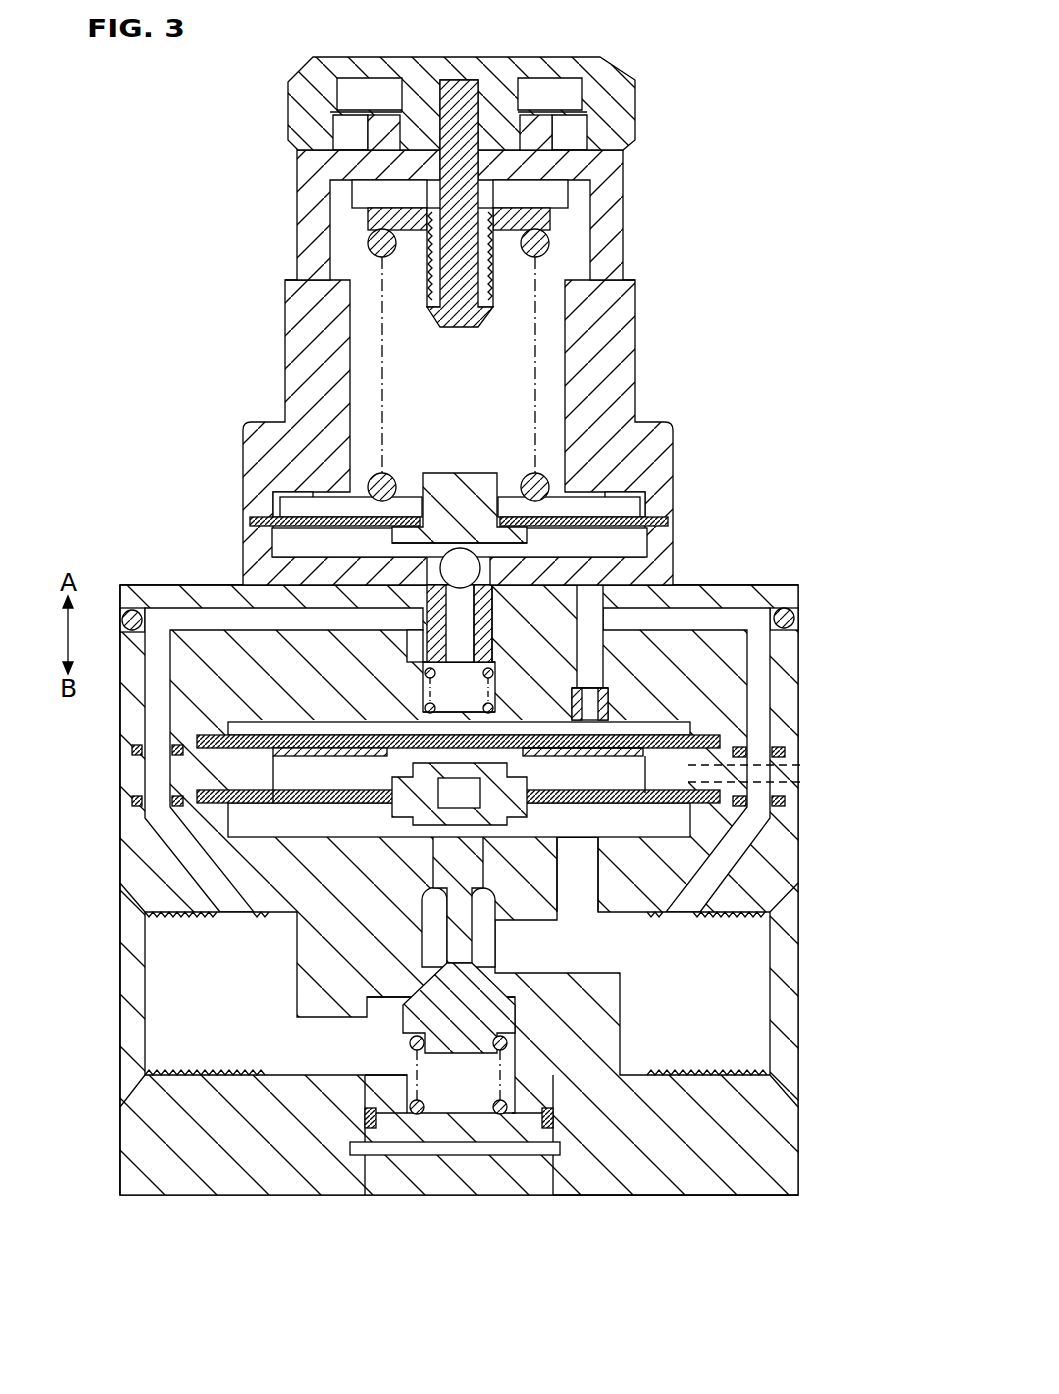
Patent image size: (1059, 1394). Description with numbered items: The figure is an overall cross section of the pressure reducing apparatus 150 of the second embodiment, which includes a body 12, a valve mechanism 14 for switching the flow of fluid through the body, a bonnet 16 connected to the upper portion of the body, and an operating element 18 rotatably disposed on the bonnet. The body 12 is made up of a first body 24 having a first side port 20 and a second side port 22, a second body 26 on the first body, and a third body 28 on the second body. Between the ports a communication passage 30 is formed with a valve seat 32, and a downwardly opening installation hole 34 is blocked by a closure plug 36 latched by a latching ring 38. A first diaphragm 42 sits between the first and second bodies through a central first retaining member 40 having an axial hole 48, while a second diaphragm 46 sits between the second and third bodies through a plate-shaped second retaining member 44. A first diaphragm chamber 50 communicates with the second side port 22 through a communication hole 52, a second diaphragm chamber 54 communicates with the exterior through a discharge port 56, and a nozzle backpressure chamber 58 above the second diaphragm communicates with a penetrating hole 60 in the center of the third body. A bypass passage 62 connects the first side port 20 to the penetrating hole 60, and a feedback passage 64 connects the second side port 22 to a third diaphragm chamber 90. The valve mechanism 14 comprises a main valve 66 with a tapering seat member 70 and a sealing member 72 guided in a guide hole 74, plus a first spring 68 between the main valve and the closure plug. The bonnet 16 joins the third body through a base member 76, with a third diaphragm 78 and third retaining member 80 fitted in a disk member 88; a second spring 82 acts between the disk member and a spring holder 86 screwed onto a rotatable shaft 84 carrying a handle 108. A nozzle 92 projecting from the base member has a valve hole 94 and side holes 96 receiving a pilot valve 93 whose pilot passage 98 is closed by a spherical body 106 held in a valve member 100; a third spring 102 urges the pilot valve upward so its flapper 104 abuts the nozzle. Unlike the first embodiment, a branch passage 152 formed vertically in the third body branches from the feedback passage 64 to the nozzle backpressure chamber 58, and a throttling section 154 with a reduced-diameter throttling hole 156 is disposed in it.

The body 12 is at (196, 1199).
The valve mechanism 14 is at (493, 962).
The bonnet 16 is at (643, 336).
The operating element 18 is at (270, 112).
The first side port 20 is at (160, 1030).
The second side port 22 is at (755, 1020).
The first body 24 is at (686, 1196).
The second body 26 is at (136, 778).
The third body 28 is at (757, 599).
The communication passage 30 is at (332, 1055).
The valve seat 32 is at (496, 1001).
The installation hole 34 is at (550, 1157).
The closure plug 36 is at (452, 1140).
The latching ring 38 is at (371, 1130).
The first retaining member 40 is at (510, 781).
The first diaphragm 42 is at (378, 805).
The second retaining member 44 is at (586, 757).
The second diaphragm 46 is at (285, 738).
The hole 48 is at (445, 780).
The first diaphragm chamber 50 is at (252, 812).
The communication hole 52 is at (598, 903).
The second diaphragm chamber 54 is at (668, 752).
The discharge port 56 is at (780, 777).
The nozzle backpressure chamber 58 is at (632, 740).
The penetrating hole 60 is at (493, 703).
The bypass passage 62 is at (215, 620).
The feedback passage 64 is at (765, 670).
The main valve 66 is at (457, 1056).
The first spring 68 is at (495, 1118).
The seat member 70 is at (425, 993).
The sealing member 72 is at (470, 818).
The guide hole 74 is at (440, 878).
The base member 76 is at (659, 548).
The third diaphragm 78 is at (655, 517).
The third retaining member 80 is at (458, 500).
The second spring 82 is at (366, 240).
The rotatable shaft 84 is at (460, 85).
The spring holder 86 is at (540, 222).
The disk member 88 is at (403, 500).
The third diaphragm chamber 90 is at (280, 545).
The nozzle 92 is at (495, 652).
The pilot valve 93 is at (498, 635).
The valve hole 94 is at (489, 614).
The side holes 96 is at (420, 616).
The pilot passage 98 is at (459, 688).
The valve member 100 is at (470, 565).
The third spring 102 is at (425, 698).
The flapper 104 is at (432, 662).
The spherical body 106 is at (452, 560).
The handle 108 is at (400, 65).
The pressure reducing apparatus 150 is at (740, 38).
The branch passage 152 is at (590, 656).
The throttling section 154 is at (583, 706).
The throttling hole 156 is at (562, 688).